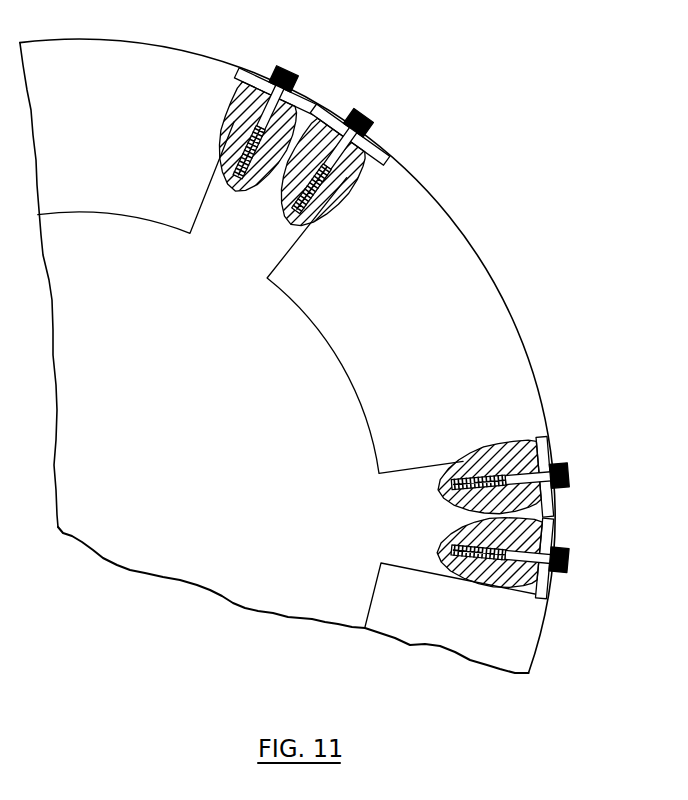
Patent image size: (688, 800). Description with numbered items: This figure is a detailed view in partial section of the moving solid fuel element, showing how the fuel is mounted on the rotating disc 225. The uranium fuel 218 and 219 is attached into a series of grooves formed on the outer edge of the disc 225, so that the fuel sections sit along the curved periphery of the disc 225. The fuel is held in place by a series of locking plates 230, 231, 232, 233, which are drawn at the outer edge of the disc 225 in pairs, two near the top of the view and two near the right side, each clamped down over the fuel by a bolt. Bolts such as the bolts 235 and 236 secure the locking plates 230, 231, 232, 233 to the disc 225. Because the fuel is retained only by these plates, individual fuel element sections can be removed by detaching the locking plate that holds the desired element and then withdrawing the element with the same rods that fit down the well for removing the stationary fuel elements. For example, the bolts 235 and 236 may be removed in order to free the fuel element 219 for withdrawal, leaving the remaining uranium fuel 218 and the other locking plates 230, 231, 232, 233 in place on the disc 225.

The uranium fuel 218 is at (180, 44).
The uranium fuel 219 is at (506, 307).
The disc 225 is at (300, 620).
The locking plate 230 is at (241, 71).
The locking plate 231 is at (373, 147).
The locking plate 232 is at (552, 442).
The locking plate 233 is at (553, 580).
The bolt 235 is at (337, 111).
The bolt 236 is at (565, 543).